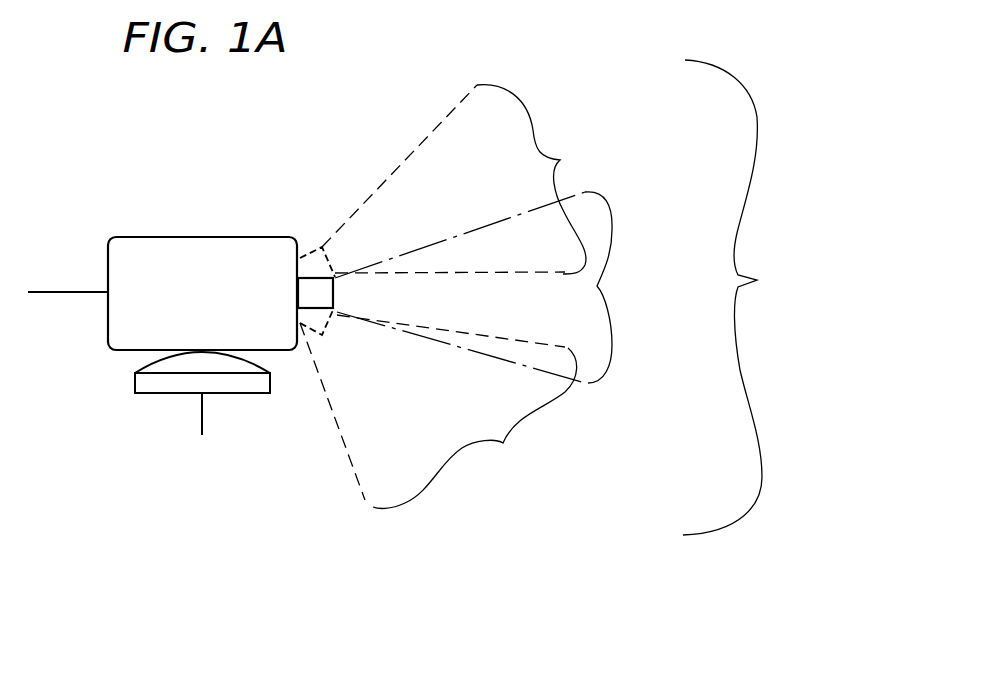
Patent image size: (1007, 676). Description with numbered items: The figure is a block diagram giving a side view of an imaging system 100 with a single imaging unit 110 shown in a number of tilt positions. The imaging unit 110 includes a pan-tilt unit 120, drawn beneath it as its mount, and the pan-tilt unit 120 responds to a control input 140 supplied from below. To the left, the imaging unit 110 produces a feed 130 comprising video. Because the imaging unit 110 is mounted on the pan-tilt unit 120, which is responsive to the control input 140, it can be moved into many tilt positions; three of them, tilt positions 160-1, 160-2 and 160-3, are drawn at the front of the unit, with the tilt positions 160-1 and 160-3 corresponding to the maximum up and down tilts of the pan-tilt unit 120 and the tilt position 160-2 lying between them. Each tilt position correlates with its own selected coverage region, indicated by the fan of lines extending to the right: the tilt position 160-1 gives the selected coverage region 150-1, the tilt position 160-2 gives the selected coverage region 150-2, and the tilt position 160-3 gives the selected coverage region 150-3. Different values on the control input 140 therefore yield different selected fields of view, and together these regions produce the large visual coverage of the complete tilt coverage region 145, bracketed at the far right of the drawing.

The imaging system 100 is at (116, 143).
The imaging unit 110 is at (185, 318).
The pan-tilt unit 120 is at (134, 378).
The feed 130 is at (72, 291).
The control input 140 is at (202, 425).
The complete tilt coverage region 145 is at (780, 297).
The selected coverage region 150-1 is at (475, 181).
The selected coverage region 150-2 is at (528, 287).
The selected coverage region 150-3 is at (442, 410).
The tilt position 160-1 is at (310, 262).
The tilt position 160-2 is at (323, 295).
The tilt position 160-3 is at (312, 322).